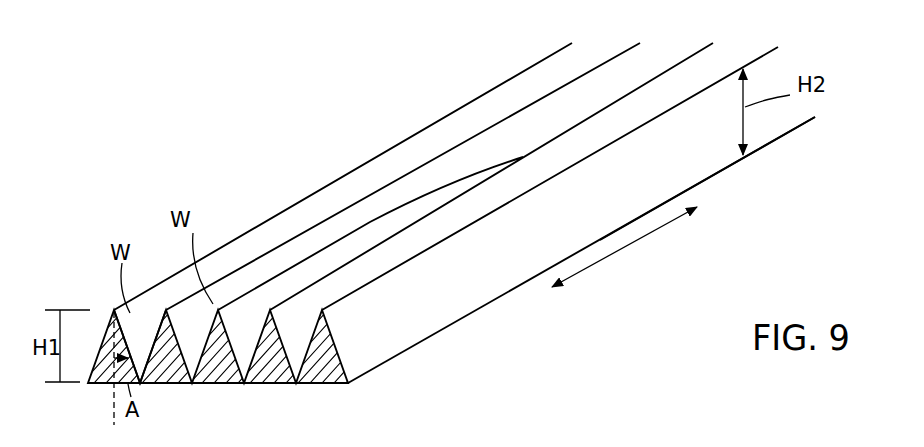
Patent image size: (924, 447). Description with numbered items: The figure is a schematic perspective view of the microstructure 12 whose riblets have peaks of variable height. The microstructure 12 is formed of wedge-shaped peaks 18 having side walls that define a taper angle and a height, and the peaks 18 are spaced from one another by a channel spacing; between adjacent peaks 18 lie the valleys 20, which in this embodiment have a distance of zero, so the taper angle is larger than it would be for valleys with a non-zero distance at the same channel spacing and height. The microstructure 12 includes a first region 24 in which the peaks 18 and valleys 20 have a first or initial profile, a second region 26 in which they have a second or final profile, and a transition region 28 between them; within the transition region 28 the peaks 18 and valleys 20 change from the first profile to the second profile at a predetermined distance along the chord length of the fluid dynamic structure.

The microstructure 12 is at (466, 217).
The peaks 18 is at (170, 276).
The valleys 20 is at (140, 380).
The first region 24 is at (462, 320).
The second region 26 is at (799, 135).
The transition region 28 is at (625, 248).